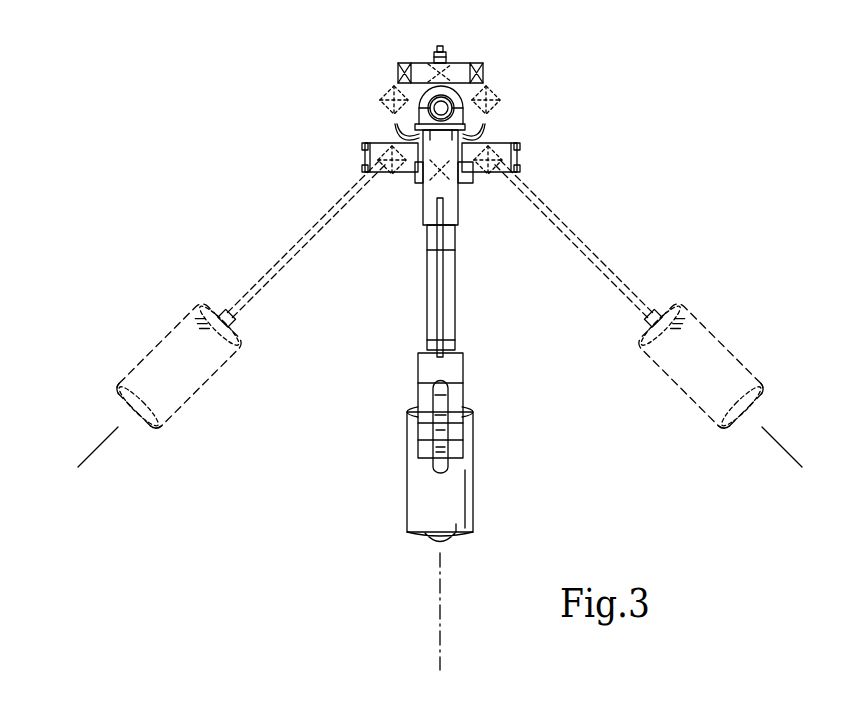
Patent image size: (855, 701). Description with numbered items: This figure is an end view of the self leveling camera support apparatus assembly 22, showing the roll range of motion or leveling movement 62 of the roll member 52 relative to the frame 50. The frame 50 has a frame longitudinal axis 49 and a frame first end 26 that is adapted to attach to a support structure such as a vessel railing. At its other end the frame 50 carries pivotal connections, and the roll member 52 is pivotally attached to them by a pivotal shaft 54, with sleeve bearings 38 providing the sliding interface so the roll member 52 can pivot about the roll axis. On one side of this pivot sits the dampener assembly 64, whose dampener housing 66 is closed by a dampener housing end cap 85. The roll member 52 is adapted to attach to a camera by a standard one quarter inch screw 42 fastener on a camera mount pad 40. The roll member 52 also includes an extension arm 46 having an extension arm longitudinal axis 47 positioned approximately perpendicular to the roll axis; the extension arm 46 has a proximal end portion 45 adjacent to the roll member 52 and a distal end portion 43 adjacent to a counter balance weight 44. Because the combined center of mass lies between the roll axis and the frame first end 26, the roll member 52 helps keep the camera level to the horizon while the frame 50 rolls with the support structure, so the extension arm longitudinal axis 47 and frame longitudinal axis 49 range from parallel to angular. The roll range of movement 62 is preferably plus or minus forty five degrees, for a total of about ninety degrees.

The self leveling camera support apparatus assembly 22 is at (236, 148).
The frame first end 26 is at (418, 392).
The sleeve bearings 38 is at (464, 100).
The camera mount pad 40 is at (448, 53).
The screw 42 is at (441, 50).
The distal end portion 43 is at (238, 298).
The counter balance weight 44 is at (157, 343).
The proximal end portion 45 is at (330, 210).
The extension arm 46 is at (283, 253).
The extension arm longitudinal axis 47 is at (103, 462).
The frame longitudinal axis 49 is at (437, 611).
The frame 50 is at (425, 303).
The roll member 52 is at (415, 62).
The pivotal shaft 54 is at (420, 118).
The roll range of motion 62 is at (413, 268).
The dampener assembly 64 is at (518, 157).
The dampener housing 66 is at (514, 143).
The dampener housing end cap 85 is at (362, 157).